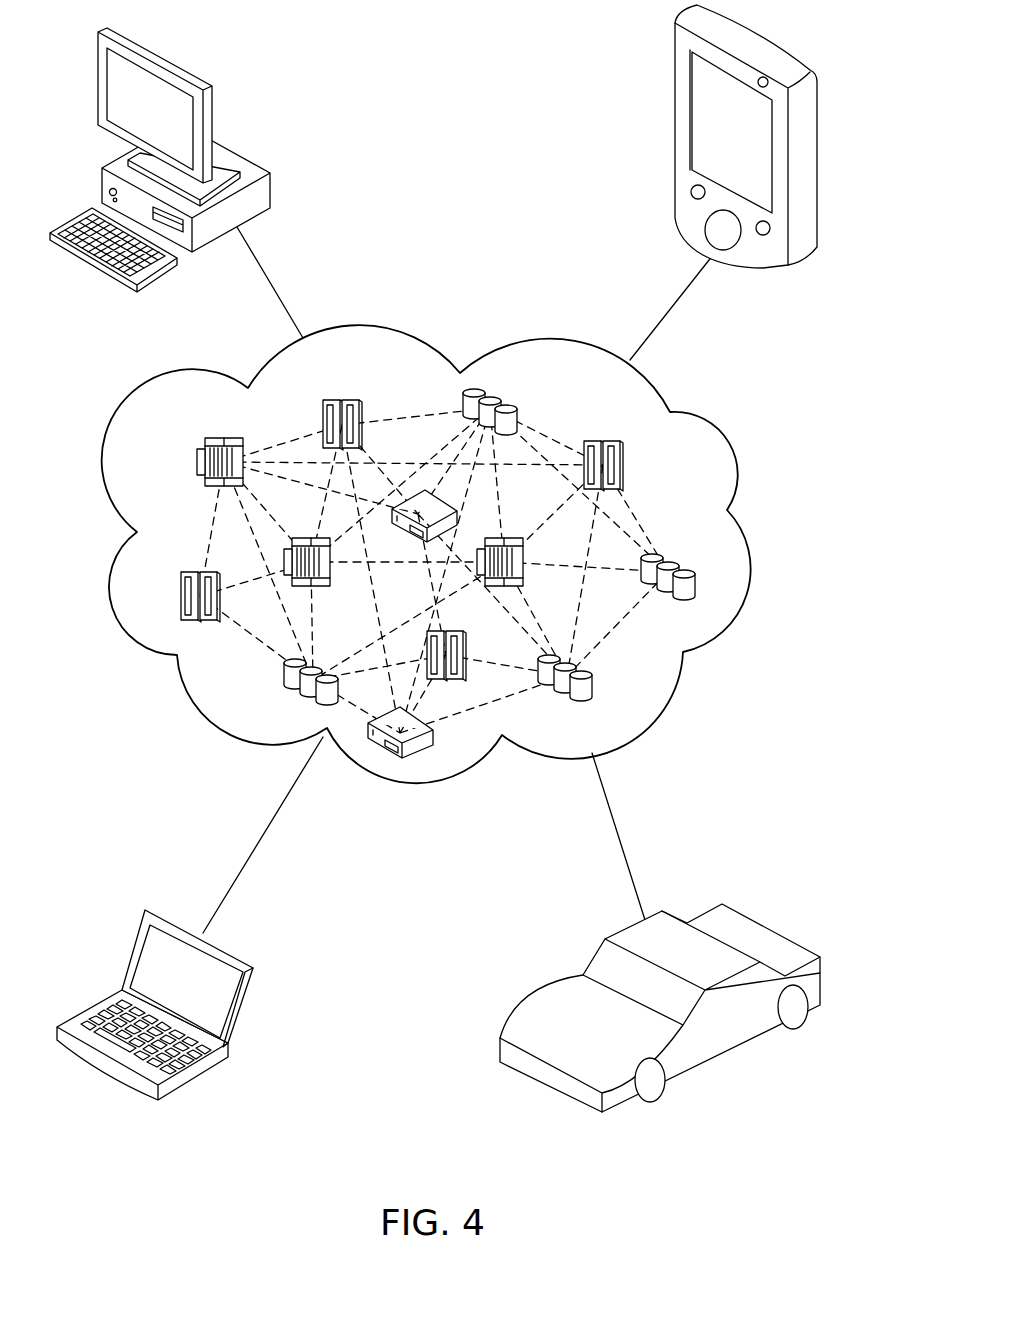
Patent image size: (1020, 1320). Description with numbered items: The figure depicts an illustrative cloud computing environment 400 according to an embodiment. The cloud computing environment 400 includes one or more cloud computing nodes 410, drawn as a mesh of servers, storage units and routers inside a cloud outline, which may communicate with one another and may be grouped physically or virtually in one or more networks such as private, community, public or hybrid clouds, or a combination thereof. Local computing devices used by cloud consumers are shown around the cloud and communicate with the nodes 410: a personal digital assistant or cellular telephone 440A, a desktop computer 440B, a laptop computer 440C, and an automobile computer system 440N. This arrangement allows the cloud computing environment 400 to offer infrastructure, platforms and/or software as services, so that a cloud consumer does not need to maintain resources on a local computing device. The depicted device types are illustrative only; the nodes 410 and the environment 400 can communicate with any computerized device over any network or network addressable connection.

The network cloud 400 is at (728, 627).
The cloud computing nodes 410 is at (670, 487).
The handheld mobile device 440A is at (672, 85).
The desktop computer 440B is at (270, 190).
The laptop computer 440C is at (253, 978).
The vehicle 440N is at (823, 975).